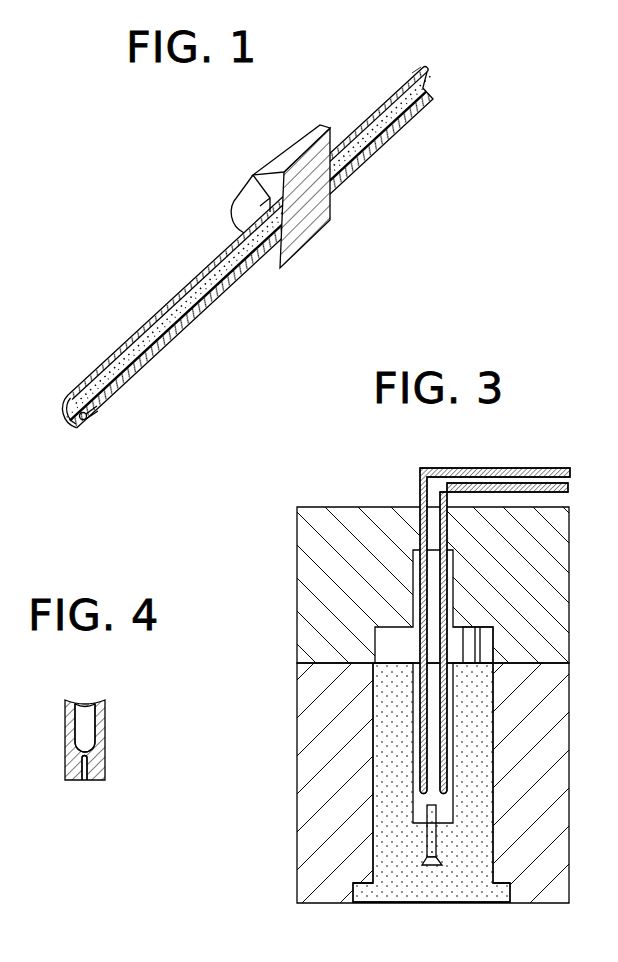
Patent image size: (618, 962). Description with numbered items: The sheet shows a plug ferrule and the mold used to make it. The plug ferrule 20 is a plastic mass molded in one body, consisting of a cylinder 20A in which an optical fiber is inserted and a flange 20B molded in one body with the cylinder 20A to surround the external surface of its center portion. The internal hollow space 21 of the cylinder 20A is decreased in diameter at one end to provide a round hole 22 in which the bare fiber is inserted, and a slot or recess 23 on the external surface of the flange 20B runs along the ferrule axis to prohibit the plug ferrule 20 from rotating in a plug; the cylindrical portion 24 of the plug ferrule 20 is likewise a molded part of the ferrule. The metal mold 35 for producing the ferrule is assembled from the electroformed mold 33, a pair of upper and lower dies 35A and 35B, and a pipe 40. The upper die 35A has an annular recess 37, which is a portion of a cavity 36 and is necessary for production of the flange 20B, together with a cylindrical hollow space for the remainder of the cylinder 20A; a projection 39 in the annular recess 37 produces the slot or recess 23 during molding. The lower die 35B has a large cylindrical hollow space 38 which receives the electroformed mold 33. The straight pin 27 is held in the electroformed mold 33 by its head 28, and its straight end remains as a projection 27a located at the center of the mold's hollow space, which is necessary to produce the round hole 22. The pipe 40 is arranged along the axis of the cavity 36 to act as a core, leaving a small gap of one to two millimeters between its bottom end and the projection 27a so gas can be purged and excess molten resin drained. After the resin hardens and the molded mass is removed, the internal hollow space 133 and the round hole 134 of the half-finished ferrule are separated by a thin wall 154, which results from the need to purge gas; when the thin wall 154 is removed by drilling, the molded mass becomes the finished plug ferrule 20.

In FIG. 1, the plug ferrule 20 is at (385, 255).
In FIG. 1, the cylinder 20A is at (185, 291).
In FIG. 1, the flange 20B is at (308, 134).
In FIG. 1, the internal hollow space 21 is at (205, 296).
In FIG. 1, the round hole 22 is at (90, 423).
In FIG. 1, the slot or recess 23 is at (238, 196).
In FIG. 1, the cylindrical portion 24 is at (401, 87).
In FIG. 3, the metal mold 35 is at (273, 529).
In FIG. 3, the upper die 35A is at (305, 585).
In FIG. 3, the lower die 35B is at (297, 794).
In FIG. 3, the cavity 36 is at (424, 722).
In FIG. 3, the annular recess 37 is at (457, 646).
In FIG. 3, the projection 39 is at (481, 640).
In FIG. 3, the pipe 40 is at (446, 712).
In FIG. 3, the straight pin 27 is at (445, 850).
In FIG. 3, the projection 27a is at (437, 815).
In FIG. 3, the head 28 is at (429, 866).
In FIG. 3, the electroformed mold 33 is at (475, 843).
In FIG. 3, the large cylindrical hollow space 38 is at (485, 878).
In FIG. 4, the internal hollow space 133 is at (83, 722).
In FIG. 4, the thin wall 154 is at (92, 758).
In FIG. 4, the round hole 134 is at (84, 767).